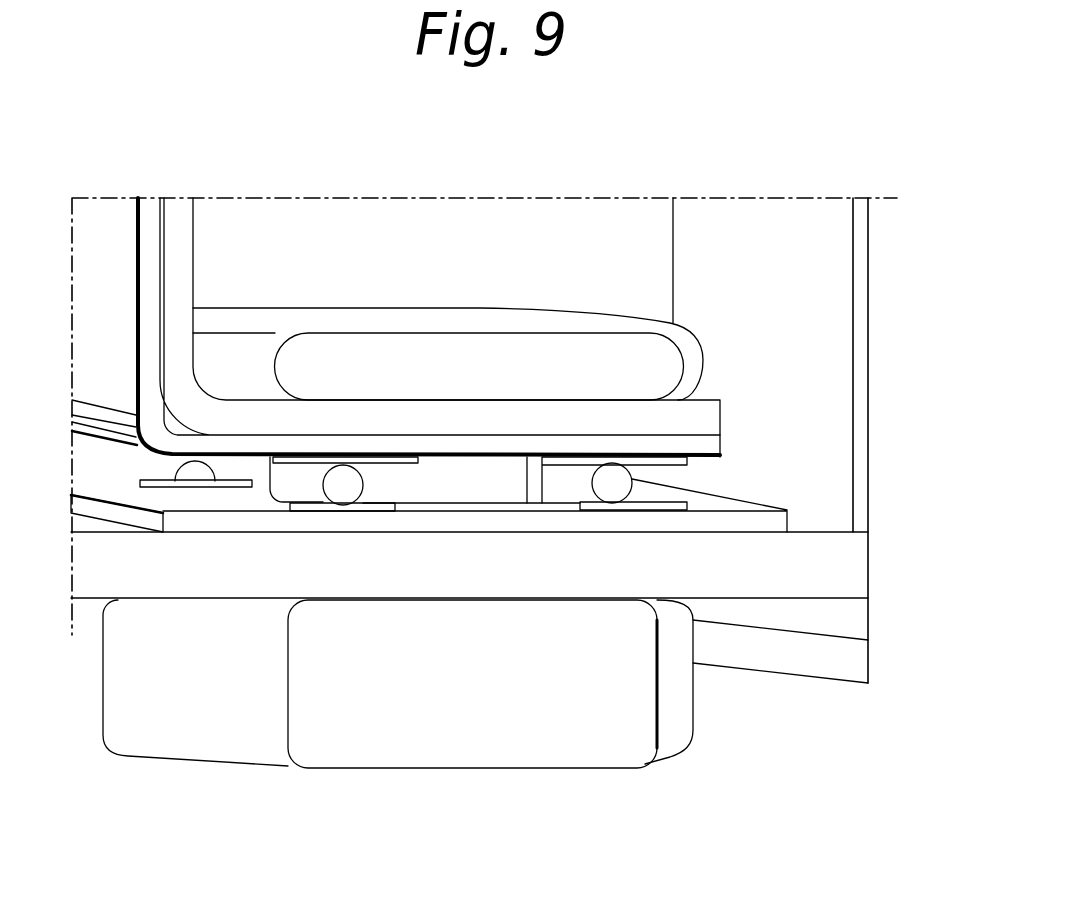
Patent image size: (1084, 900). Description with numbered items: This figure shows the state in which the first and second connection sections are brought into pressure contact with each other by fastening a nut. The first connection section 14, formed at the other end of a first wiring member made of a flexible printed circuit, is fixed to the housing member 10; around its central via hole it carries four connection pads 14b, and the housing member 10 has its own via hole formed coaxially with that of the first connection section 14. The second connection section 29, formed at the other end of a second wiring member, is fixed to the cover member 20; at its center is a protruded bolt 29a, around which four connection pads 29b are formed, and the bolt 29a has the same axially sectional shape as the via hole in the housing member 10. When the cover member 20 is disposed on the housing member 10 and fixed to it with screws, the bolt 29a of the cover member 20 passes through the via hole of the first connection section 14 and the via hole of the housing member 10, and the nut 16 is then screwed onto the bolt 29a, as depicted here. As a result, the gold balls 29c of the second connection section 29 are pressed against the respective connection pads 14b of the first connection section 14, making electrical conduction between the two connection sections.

The housing member 10 is at (840, 572).
The first connection section 14 is at (778, 520).
The connection pads 14b is at (208, 484).
The nut 16 is at (452, 733).
The cover member 20 is at (863, 272).
The second connection section 29 is at (705, 443).
The bolt 29a is at (396, 362).
The connection pads 29b is at (397, 463).
The gold balls 29c is at (194, 470).